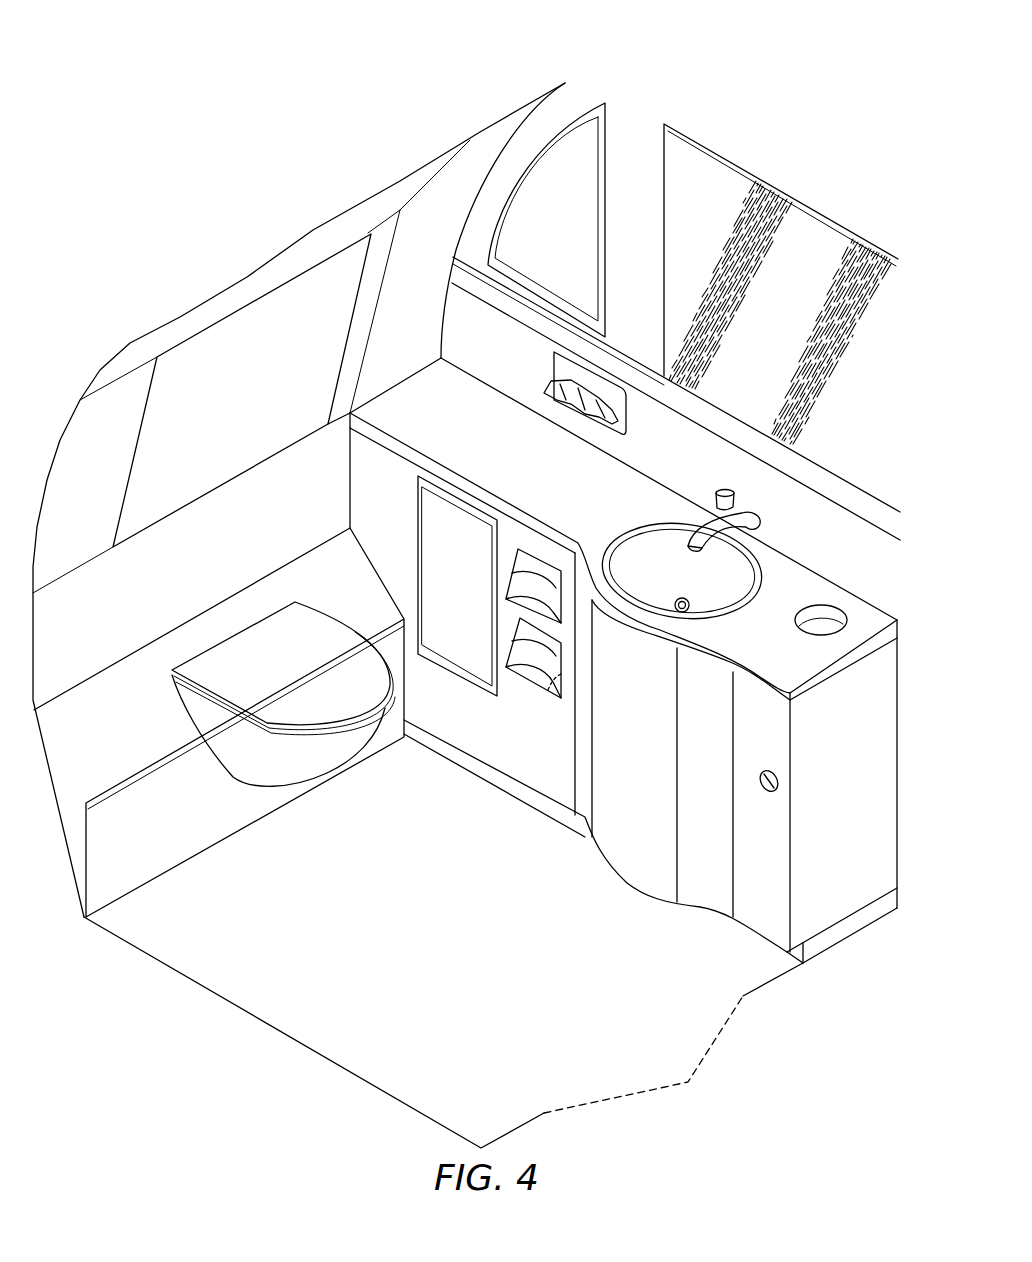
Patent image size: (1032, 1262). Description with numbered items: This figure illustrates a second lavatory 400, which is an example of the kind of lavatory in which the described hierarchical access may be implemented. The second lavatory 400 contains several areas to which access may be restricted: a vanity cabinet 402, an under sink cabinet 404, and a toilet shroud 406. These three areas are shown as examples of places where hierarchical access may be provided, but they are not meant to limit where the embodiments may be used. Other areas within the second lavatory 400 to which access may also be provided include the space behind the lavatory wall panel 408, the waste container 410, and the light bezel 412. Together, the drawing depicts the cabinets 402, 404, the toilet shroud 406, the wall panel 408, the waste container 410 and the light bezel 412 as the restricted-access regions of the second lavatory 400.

The second lavatory 400 is at (243, 56).
The vanity cabinet 402 is at (784, 192).
The under sink cabinet 404 is at (652, 760).
The toilet shroud 406 is at (182, 847).
The lavatory wall panel 408 is at (656, 86).
The waste container 410 is at (458, 640).
The light bezel 412 is at (546, 182).